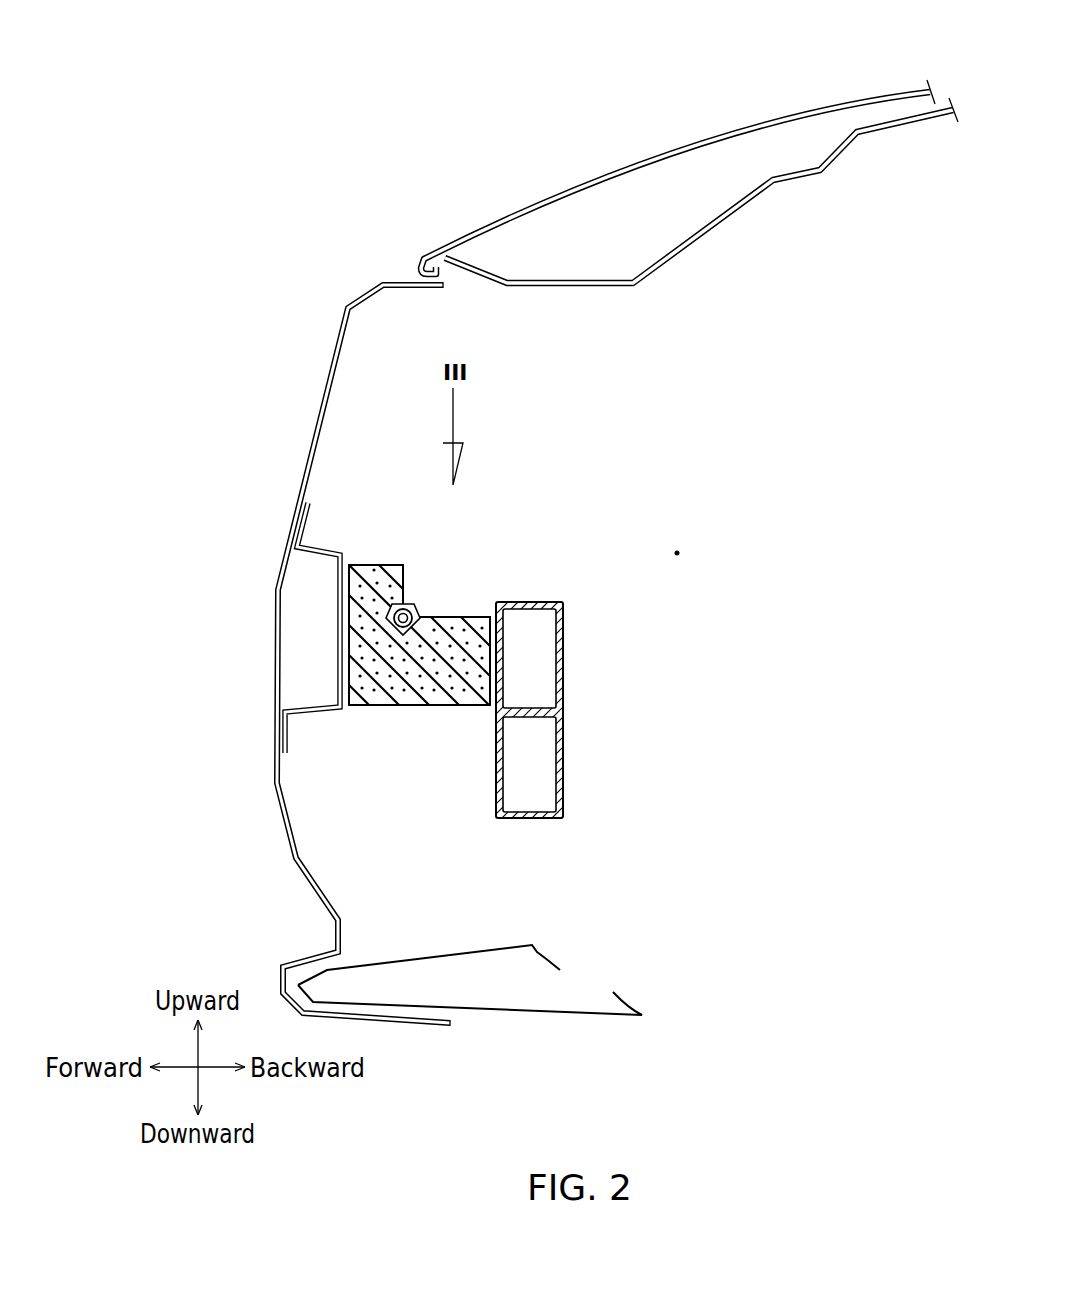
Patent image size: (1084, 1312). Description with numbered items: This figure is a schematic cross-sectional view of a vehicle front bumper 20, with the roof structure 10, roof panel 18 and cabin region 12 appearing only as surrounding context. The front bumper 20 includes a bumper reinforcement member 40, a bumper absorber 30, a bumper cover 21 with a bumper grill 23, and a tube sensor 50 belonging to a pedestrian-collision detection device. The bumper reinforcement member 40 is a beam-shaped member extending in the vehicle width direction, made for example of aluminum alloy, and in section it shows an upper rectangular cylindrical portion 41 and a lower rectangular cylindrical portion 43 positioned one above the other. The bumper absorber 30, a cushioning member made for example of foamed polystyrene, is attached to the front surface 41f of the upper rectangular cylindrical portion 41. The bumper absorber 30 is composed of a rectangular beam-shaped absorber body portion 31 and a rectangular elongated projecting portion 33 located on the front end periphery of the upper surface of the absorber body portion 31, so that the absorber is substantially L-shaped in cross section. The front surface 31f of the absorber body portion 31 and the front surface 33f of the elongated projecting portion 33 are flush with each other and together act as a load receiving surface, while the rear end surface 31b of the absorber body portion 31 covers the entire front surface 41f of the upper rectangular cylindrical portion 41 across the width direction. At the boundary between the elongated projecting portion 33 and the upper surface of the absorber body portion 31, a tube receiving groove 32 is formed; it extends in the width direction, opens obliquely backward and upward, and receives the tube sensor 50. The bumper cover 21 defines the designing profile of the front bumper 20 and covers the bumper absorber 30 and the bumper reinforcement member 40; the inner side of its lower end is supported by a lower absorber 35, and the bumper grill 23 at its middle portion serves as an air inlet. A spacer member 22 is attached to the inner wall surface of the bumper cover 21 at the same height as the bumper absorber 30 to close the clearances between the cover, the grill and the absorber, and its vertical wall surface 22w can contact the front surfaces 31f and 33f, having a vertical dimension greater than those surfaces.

The vehicle roof structure 10 is at (689, 152).
The vehicle cabin 12 is at (678, 550).
The roof panel 18 is at (570, 190).
The front bumper 20 is at (289, 654).
The bumper cover 21 is at (295, 654).
The bumper grill 23 is at (311, 409).
The spacer member 22 is at (299, 644).
The vertical wall surface 22w is at (367, 683).
The bumper absorber 30 is at (398, 631).
The absorber body portion 31 is at (398, 631).
The rear end surface 31b is at (495, 672).
The front surface 31f is at (350, 663).
The tube receiving groove 32 is at (419, 615).
The elongated projecting portion 33 is at (372, 573).
The front surface 33f is at (350, 603).
The lower absorber 35 is at (460, 946).
The bumper reinforcement member 40 is at (783, 679).
The upper rectangular cylindrical portion 41 is at (783, 679).
The front surface 41f is at (483, 624).
The lower rectangular cylindrical portion 43 is at (565, 778).
The tube sensor 50 is at (405, 606).